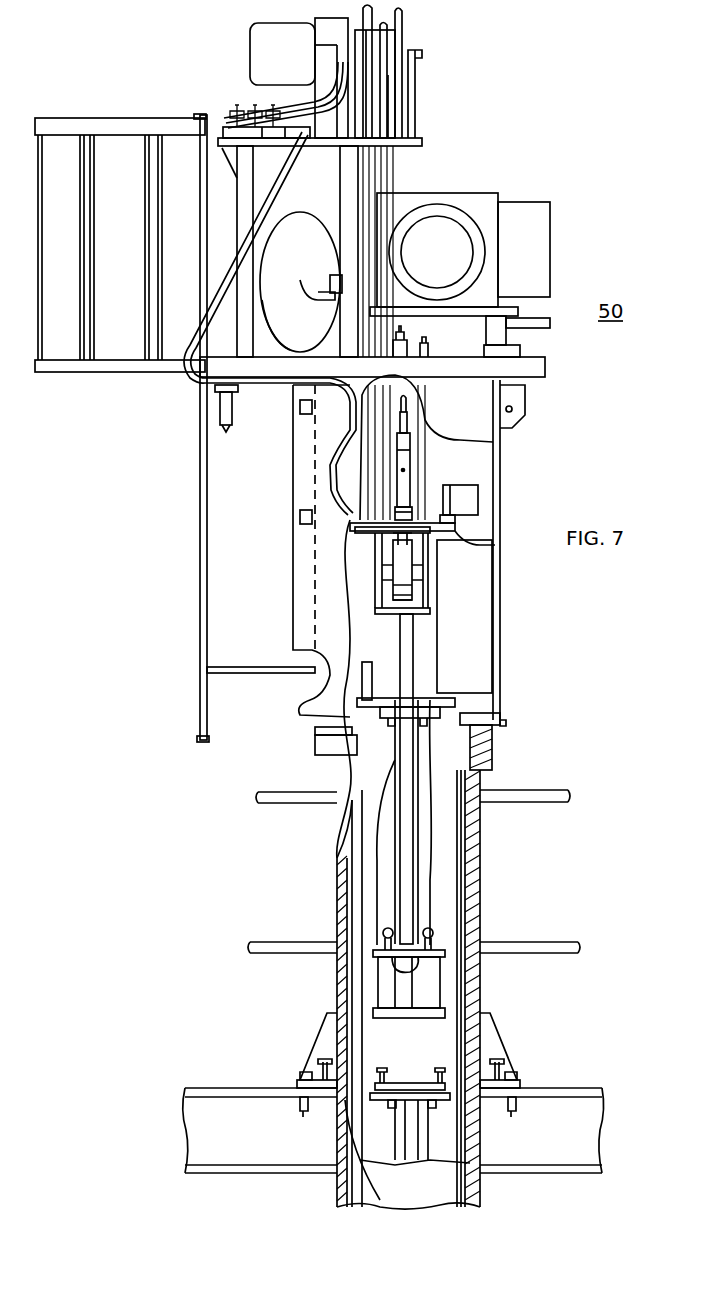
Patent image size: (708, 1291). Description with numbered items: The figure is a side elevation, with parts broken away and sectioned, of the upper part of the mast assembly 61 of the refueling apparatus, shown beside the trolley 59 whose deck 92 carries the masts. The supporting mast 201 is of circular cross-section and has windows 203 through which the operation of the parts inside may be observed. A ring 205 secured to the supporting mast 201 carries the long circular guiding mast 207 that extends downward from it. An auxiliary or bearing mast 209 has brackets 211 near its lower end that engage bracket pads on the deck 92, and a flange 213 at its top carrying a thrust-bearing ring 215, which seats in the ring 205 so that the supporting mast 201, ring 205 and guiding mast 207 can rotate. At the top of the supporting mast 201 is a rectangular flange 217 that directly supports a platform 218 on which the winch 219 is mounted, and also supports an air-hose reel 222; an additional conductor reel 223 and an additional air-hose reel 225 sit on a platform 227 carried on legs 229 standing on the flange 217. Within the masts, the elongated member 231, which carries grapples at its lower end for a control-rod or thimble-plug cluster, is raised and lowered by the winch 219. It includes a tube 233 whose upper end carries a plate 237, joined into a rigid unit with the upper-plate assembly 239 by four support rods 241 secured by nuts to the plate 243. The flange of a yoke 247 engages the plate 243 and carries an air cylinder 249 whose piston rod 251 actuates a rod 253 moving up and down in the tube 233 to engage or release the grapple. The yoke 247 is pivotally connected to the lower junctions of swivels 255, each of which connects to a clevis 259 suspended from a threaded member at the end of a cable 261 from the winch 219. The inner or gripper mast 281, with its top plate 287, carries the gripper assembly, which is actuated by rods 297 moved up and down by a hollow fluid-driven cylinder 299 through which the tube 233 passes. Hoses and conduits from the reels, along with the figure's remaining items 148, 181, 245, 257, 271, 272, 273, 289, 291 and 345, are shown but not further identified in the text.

The trolley 59 is at (65, 378).
The mast assembly 61 is at (505, 722).
The deck 92 is at (583, 1088).
The mounting bolt 148 is at (303, 1083).
The hose 181 is at (283, 395).
The supporting mast 201 is at (498, 620).
The windows 203 is at (293, 625).
The ring 205 is at (490, 731).
The guiding mast 207 is at (463, 873).
The auxiliary mast 209 is at (480, 848).
The brackets 211 is at (497, 1048).
The flange 213 is at (320, 745).
The thrust-bearing ring 215 is at (498, 740).
The rectangular flange 217 is at (545, 368).
The platform 218 is at (520, 312).
The winch 219 is at (478, 200).
The air-hose reel 222 is at (320, 215).
The additional reel 223 is at (398, 40).
The additional air-hose reel 225 is at (355, 50).
The platform 227 is at (418, 140).
The legs 229 is at (355, 183).
The elongated member 231 is at (395, 766).
The tube 233 is at (405, 884).
The plate 237 is at (428, 608).
The upper-plate assembly 239 is at (425, 507).
The support rods 241 is at (395, 560).
The plate 243 is at (423, 543).
The piston 245 is at (420, 566).
The yoke 247 is at (392, 512).
The cylinder 249 is at (380, 583).
The piston rod 251 is at (393, 593).
The rod 253 is at (410, 1130).
The swivels 255 is at (408, 485).
The piston rod 257 is at (403, 428).
The clevis 259 is at (397, 447).
The cable 261 is at (405, 410).
The bracket 271 is at (458, 517).
The switch box 272 is at (462, 487).
The cable 273 is at (455, 526).
The inner mast 281 is at (448, 918).
The top plate 287 is at (440, 703).
The coupling 289 is at (420, 722).
The stop 291 is at (367, 663).
The rods 297 is at (440, 1128).
The hollow fluid driven cylinder 299 is at (380, 977).
The pipe 345 is at (386, 28).